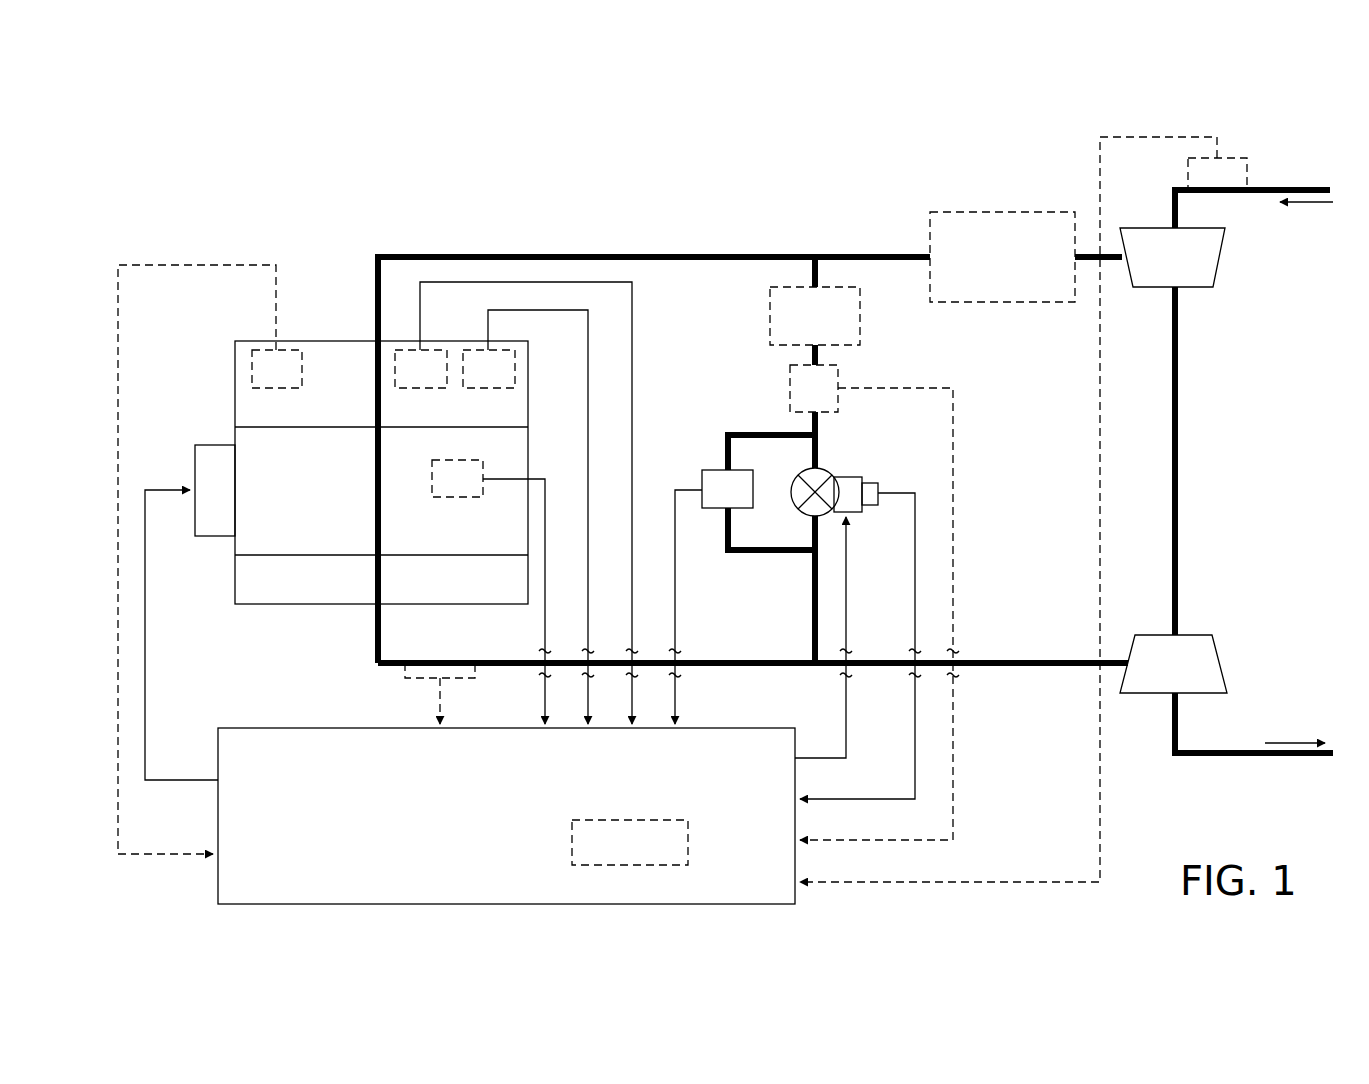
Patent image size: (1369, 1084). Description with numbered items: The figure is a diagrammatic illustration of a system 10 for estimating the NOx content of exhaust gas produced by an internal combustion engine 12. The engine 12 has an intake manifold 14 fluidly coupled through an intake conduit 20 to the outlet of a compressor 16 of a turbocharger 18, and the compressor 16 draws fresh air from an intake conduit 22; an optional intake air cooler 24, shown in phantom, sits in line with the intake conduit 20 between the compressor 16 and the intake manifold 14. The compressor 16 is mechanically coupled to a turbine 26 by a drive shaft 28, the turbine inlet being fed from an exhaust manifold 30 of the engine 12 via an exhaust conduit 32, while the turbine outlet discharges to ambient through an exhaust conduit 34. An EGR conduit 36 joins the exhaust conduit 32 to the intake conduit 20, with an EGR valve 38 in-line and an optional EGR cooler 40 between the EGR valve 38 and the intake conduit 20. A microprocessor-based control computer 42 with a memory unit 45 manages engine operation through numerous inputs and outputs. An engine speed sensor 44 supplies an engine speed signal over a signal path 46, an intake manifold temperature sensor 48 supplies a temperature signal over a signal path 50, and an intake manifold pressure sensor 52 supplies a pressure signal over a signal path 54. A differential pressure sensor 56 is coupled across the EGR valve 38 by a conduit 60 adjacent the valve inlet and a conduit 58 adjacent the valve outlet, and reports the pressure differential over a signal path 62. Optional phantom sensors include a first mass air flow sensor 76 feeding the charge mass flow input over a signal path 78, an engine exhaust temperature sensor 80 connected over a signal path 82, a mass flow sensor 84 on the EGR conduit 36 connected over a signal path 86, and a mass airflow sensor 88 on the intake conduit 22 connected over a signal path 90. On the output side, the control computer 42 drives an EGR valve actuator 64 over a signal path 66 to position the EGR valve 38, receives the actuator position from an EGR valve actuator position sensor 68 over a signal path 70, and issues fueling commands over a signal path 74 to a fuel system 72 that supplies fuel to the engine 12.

The system 10 is at (292, 240).
The internal combustion engine 12 is at (235, 432).
The intake manifold 14 is at (343, 341).
The compressor 16 is at (1218, 278).
The turbocharger 18 is at (1210, 438).
The intake conduit 20 is at (697, 257).
The intake conduit 22 is at (1262, 192).
The intake air cooler 24 is at (1025, 302).
The turbine 26 is at (1222, 668).
The drive shaft 28 is at (1175, 478).
The exhaust manifold 30 is at (260, 604).
The exhaust conduit 32 is at (1027, 663).
The exhaust conduit 34 is at (1208, 755).
The EGR conduit 36 is at (812, 640).
The EGR valve 38 is at (796, 506).
The EGR cooler 40 is at (860, 312).
The control computer 42 is at (218, 890).
The engine speed sensor 44 is at (460, 497).
The memory unit 45 is at (572, 840).
The signal path 46 is at (545, 610).
The intake manifold temperature sensor 48 is at (515, 360).
The signal path 50 is at (588, 430).
The intake manifold pressure sensor 52 is at (395, 358).
The signal path 54 is at (632, 360).
The differential pressure sensor 56 is at (712, 470).
The conduit 58 is at (742, 435).
The conduit 60 is at (745, 550).
The signal path 62 is at (685, 490).
The EGR valve actuator 64 is at (845, 477).
The signal path 66 is at (846, 726).
The EGR valve actuator position sensor 68 is at (870, 483).
The signal path 70 is at (915, 540).
The fuel system 72 is at (216, 536).
The signal path 74 is at (145, 655).
The first mass air flow sensor 76 is at (252, 366).
The signal path 78 is at (118, 325).
The engine exhaust temperature sensor 80 is at (405, 678).
The signal path 82 is at (442, 707).
The mass flow sensor 84 is at (790, 398).
The signal path 86 is at (953, 452).
The mass airflow sensor 88 is at (1247, 173).
The signal path 90 is at (1100, 384).